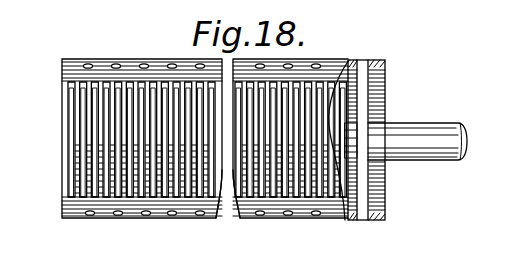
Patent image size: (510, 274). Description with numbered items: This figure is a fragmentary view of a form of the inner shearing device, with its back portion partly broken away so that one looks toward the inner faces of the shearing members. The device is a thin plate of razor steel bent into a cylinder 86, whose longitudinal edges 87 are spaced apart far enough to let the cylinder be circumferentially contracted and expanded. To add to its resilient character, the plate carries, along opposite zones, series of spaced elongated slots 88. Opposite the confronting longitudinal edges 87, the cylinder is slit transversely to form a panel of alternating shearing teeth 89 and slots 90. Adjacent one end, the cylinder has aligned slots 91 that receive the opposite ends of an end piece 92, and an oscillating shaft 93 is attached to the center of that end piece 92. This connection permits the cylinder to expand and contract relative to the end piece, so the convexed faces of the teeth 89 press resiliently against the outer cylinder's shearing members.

The cylinder 86 is at (82, 207).
The longitudinal edges 87 is at (83, 146).
The elongated slots 88 is at (148, 62).
The shearing teeth 89 is at (90, 107).
The slots 90 is at (235, 173).
The aligned slots 91 is at (360, 60).
The end piece 92 is at (365, 88).
The oscillating shaft 93 is at (438, 128).